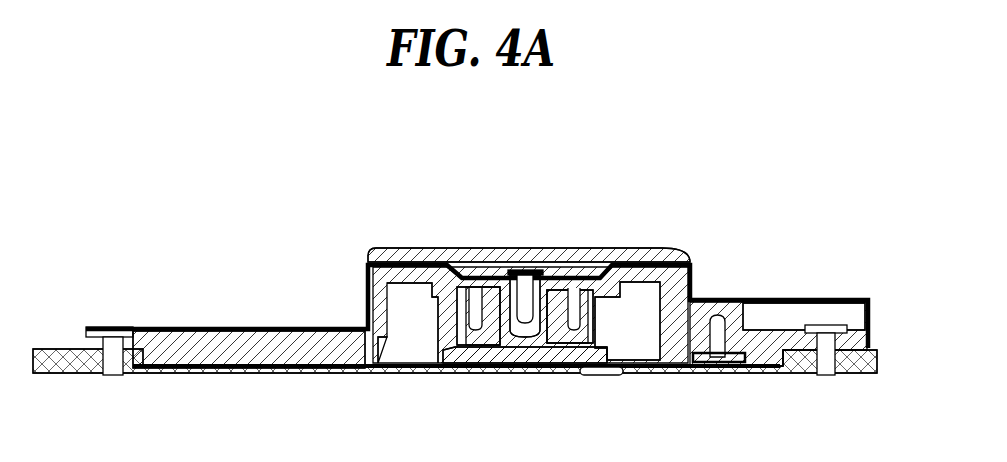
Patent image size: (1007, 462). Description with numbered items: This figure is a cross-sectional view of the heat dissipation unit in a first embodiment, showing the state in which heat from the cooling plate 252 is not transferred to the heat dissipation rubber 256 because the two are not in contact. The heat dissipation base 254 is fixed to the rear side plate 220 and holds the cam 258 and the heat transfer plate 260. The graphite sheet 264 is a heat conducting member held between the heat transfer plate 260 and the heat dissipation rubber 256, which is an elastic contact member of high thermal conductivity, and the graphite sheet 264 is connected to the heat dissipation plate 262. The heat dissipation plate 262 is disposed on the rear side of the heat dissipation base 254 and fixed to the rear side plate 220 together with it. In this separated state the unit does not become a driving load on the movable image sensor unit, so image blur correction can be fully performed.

The rear side plate 220 is at (847, 377).
The image sensor cooling plate 252 is at (647, 248).
The heat dissipation base 254 is at (737, 310).
The image sensor heat dissipation rubber 256 is at (483, 270).
The cam 258 is at (517, 352).
The heat transfer plate 260 is at (473, 292).
The heat dissipation plate 262 is at (847, 308).
The graphite sheet 264 is at (462, 277).